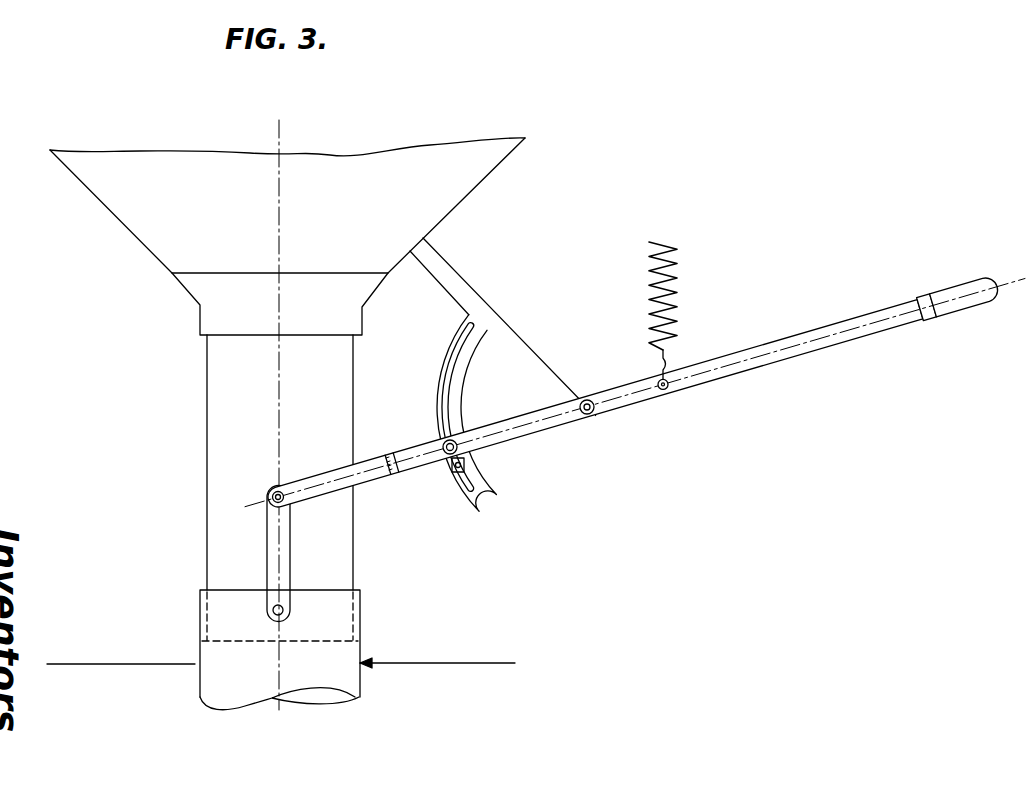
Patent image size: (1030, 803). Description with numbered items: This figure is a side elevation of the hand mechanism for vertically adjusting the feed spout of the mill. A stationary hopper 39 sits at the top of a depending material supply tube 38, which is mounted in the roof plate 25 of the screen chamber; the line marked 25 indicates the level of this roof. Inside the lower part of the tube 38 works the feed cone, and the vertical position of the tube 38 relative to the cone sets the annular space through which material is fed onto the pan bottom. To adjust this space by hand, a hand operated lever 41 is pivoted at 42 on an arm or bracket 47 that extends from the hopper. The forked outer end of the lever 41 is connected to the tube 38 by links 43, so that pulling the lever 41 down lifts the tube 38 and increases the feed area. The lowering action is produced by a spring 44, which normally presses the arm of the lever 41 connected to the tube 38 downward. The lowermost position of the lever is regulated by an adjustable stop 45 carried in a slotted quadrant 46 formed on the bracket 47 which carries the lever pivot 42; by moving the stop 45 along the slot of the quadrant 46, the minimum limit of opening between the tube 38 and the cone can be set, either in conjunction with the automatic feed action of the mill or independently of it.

The roof plate 25 is at (437, 663).
The material supply tube 38 is at (215, 681).
The hopper 39 is at (287, 415).
The hand operated lever 41 is at (792, 352).
The lever pivot 42 is at (592, 400).
The links 43 is at (272, 547).
The spring 44 is at (676, 289).
The adjustable stop 45 is at (454, 475).
The slotted quadrant 46 is at (447, 391).
The arm or bracket 47 is at (470, 282).